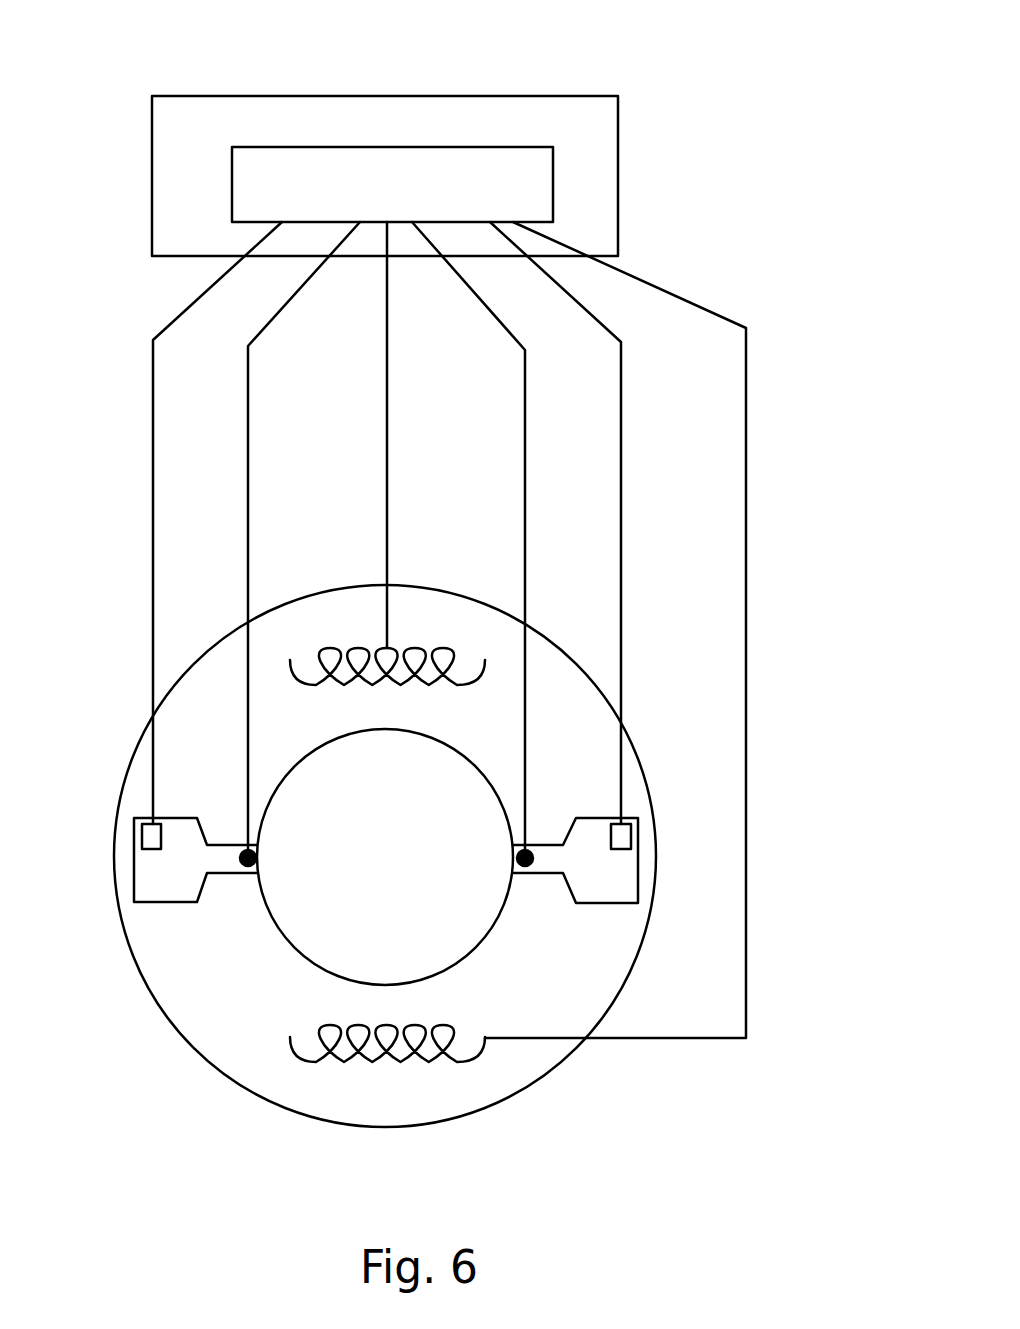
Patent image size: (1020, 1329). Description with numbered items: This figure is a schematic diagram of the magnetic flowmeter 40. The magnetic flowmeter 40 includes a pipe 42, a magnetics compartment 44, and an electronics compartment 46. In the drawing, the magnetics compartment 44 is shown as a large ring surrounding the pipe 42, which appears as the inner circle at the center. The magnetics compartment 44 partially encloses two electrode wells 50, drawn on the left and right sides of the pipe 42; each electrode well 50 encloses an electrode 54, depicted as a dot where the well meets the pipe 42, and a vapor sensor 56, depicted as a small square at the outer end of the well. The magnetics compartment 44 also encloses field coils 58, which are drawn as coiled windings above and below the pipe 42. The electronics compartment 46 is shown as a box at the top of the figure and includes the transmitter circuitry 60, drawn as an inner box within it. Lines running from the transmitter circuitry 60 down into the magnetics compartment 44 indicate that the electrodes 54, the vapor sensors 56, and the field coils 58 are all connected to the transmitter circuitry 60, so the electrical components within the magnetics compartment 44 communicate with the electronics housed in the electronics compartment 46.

The magnetic flowmeter 40 is at (755, 152).
The pipe 42 is at (310, 963).
The magnetics compartment 44 is at (448, 618).
The electronics compartment 46 is at (618, 141).
The electrode wells 50 is at (155, 880).
The electrodes 54 is at (247, 867).
The vapor sensors 56 is at (142, 838).
The field coils 58 is at (332, 645).
The transmitter circuitry 60 is at (553, 201).